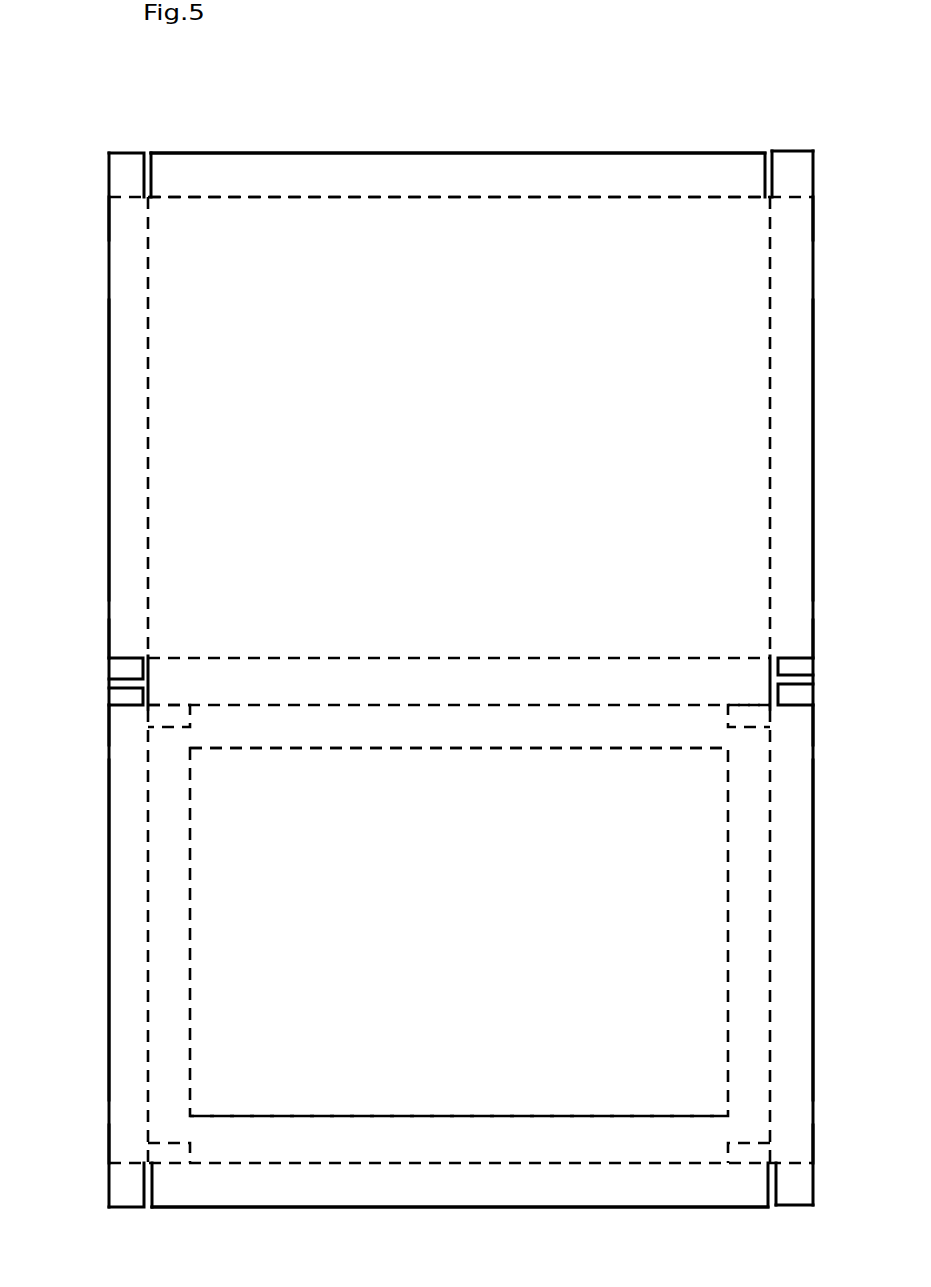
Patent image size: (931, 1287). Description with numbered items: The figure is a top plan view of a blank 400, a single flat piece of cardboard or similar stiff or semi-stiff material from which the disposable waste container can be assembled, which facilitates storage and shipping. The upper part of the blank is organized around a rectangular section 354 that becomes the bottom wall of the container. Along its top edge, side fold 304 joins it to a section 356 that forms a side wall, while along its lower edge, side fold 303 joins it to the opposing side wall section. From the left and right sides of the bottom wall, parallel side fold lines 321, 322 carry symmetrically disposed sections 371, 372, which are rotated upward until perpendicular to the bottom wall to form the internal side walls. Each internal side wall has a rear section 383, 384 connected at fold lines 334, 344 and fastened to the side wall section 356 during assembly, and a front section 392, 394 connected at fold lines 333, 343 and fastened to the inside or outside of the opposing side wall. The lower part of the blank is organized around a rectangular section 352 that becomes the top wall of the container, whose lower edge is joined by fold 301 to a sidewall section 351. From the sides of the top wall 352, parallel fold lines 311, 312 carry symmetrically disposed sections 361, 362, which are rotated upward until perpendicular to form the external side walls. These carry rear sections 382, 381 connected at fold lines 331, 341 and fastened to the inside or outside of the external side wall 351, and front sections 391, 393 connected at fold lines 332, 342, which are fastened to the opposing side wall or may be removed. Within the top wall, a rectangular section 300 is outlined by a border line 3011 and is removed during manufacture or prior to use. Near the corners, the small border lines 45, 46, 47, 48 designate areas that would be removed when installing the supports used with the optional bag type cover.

The border line 45 is at (178, 726).
The border line 46 is at (167, 1157).
The border line 47 is at (750, 1148).
The border line 48 is at (727, 722).
The rectangular section 300 is at (623, 961).
The side fold 301 is at (560, 1155).
The side fold 303 is at (459, 639).
The side fold 304 is at (640, 196).
The fold line 311 is at (148, 848).
The fold line 312 is at (771, 848).
The side fold line 321 is at (147, 298).
The side fold line 322 is at (790, 284).
The fold line 331 is at (122, 1157).
The fold line 332 is at (136, 711).
The fold line 333 is at (143, 656).
The fold line 334 is at (109, 203).
The fold line 341 is at (810, 1160).
The fold line 342 is at (806, 711).
The fold line 343 is at (794, 639).
The fold line 344 is at (813, 205).
The external side wall section 351 is at (303, 1201).
The rectangular section 352 is at (369, 1157).
The rectangular section 354 is at (317, 396).
The side wall section 356 is at (229, 191).
The external side wall section 361 is at (142, 912).
The external side wall section 362 is at (806, 912).
The internal side wall section 371 is at (143, 366).
The internal side wall section 372 is at (806, 366).
The rear section 381 is at (809, 1201).
The rear section 382 is at (142, 1201).
The rear section 383 is at (142, 193).
The rear section 384 is at (809, 193).
The front section 391 is at (125, 697).
The front section 392 is at (125, 670).
The front section 393 is at (800, 691).
The front section 394 is at (800, 666).
The blank 400 is at (472, 1218).
The border line 3011 is at (459, 932).